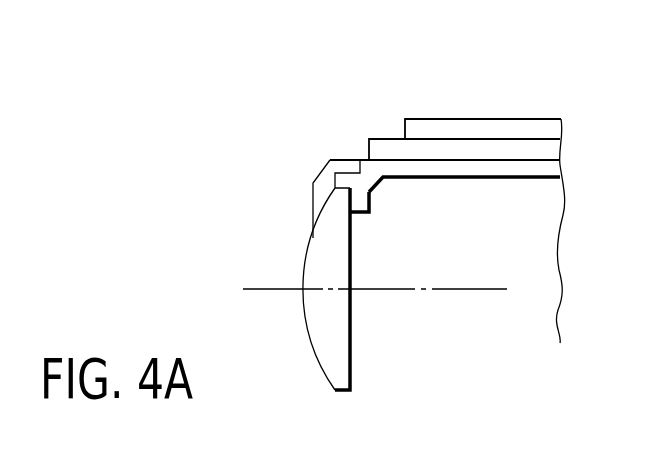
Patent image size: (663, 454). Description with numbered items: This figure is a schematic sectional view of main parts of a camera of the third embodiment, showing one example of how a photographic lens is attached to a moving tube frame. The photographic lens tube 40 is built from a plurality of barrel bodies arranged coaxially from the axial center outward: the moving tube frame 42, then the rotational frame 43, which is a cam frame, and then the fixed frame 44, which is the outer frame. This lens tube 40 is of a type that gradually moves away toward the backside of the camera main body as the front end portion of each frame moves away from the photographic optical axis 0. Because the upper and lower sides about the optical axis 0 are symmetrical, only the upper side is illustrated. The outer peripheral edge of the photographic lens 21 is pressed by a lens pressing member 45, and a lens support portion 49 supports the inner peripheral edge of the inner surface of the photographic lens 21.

The photographic lens tube 40 is at (433, 82).
The moving tube frame 42 is at (482, 180).
The rotational frame 43 is at (387, 138).
The fixed frame 44 is at (493, 118).
The lens pressing member 45 is at (317, 163).
The lens support portion 49 is at (358, 212).
The photographic lens 21 is at (352, 362).
The photographic optical axis 0 is at (363, 288).